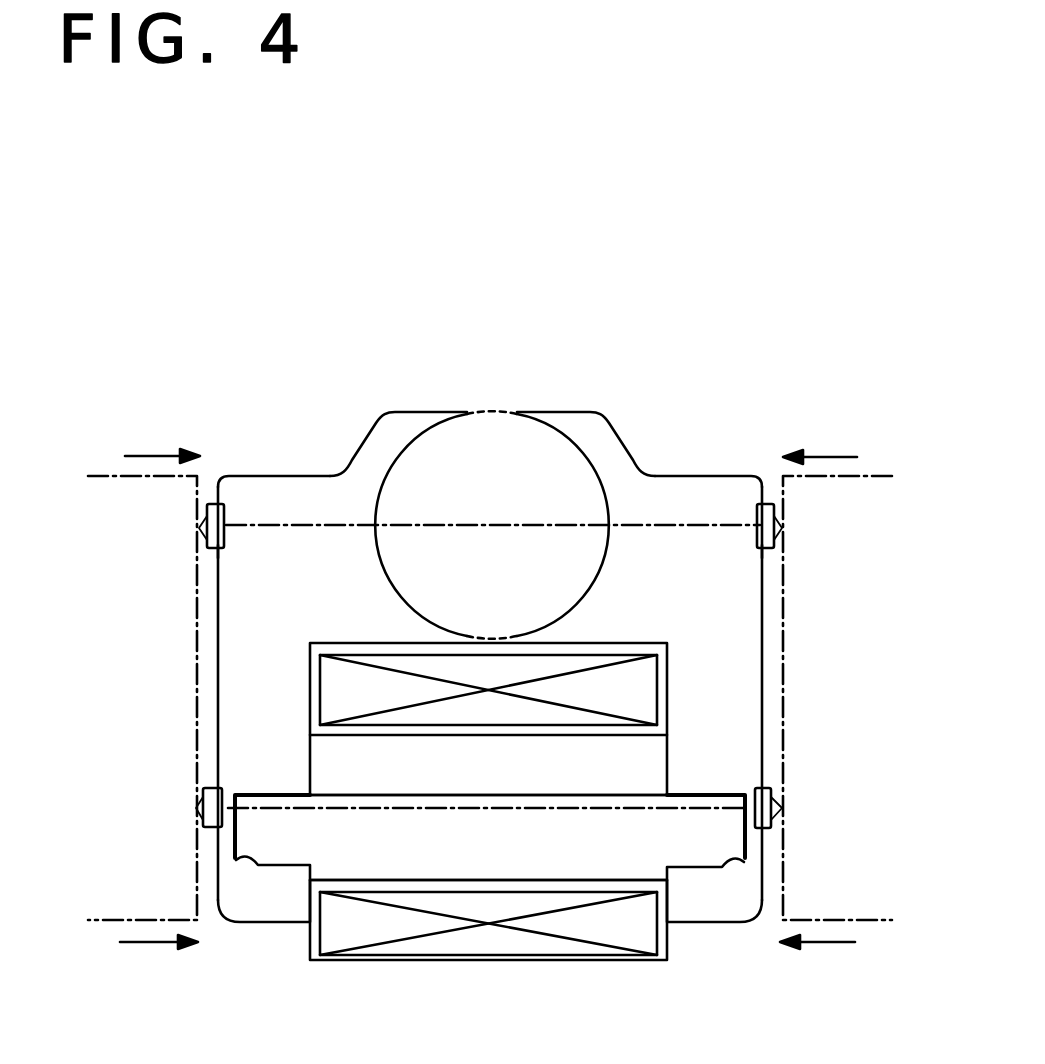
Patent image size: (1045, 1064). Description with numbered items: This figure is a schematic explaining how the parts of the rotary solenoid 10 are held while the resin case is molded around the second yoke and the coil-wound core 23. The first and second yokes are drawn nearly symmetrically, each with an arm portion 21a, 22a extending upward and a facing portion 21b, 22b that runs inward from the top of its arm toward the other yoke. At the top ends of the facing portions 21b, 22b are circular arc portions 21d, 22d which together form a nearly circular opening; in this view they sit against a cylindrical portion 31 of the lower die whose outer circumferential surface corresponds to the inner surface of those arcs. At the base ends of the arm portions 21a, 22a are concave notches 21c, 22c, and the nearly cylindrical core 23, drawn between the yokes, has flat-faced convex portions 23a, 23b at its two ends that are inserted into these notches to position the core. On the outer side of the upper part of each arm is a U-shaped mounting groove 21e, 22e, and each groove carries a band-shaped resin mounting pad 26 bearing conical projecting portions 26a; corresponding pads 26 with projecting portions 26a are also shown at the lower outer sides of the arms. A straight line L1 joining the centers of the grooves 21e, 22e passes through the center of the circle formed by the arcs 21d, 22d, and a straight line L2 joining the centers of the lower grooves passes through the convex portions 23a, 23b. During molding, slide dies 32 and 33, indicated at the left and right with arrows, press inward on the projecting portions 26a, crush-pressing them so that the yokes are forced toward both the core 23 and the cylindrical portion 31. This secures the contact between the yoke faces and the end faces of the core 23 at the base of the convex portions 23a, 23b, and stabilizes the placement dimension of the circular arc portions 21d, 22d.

The rotary solenoid 10 is at (666, 364).
The arm portion 21a is at (752, 700).
The facing portion 21b is at (683, 487).
The notch 21c is at (756, 860).
The circular arc portion 21d is at (549, 412).
The mounting groove 21e is at (785, 547).
The arm portion 22a is at (226, 700).
The facing portion 22b is at (265, 484).
The notch 22c is at (225, 860).
The circular arc portion 22d is at (420, 412).
The mounting groove 22e is at (205, 547).
The core 23 is at (693, 853).
The convex portion 23a is at (706, 797).
The convex portion 23b is at (270, 795).
The mounting pad 26 is at (207, 508).
The projecting portion 26a is at (200, 530).
The cylindrical portion 31 is at (494, 412).
The slide die 32 is at (872, 477).
The slide die 33 is at (110, 476).
The straight line L1 is at (617, 530).
The straight line L2 is at (545, 812).